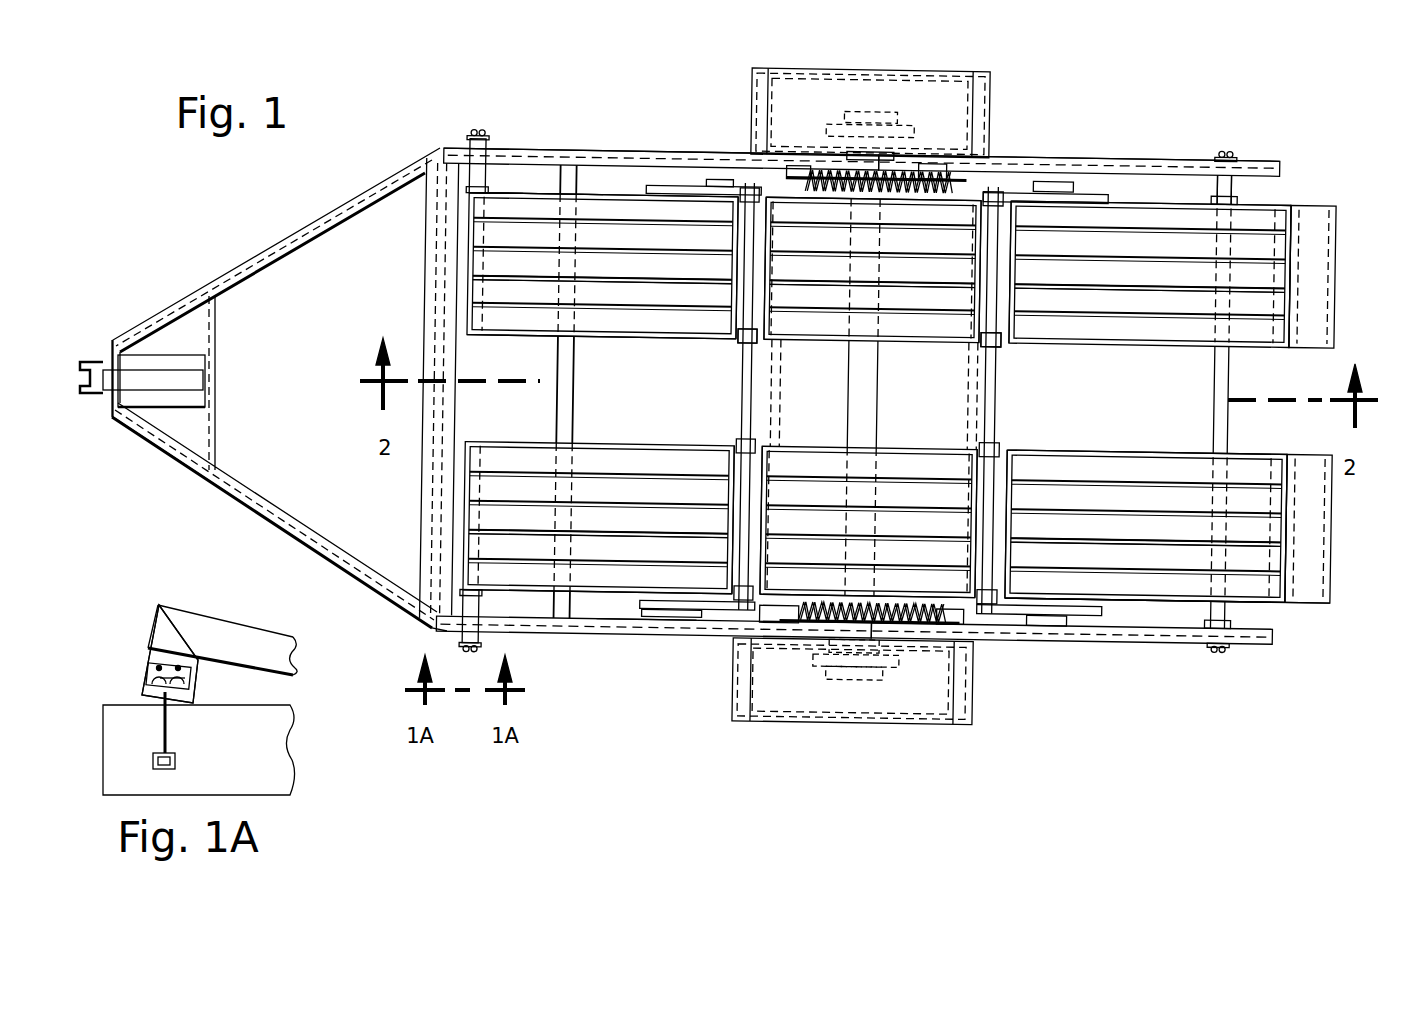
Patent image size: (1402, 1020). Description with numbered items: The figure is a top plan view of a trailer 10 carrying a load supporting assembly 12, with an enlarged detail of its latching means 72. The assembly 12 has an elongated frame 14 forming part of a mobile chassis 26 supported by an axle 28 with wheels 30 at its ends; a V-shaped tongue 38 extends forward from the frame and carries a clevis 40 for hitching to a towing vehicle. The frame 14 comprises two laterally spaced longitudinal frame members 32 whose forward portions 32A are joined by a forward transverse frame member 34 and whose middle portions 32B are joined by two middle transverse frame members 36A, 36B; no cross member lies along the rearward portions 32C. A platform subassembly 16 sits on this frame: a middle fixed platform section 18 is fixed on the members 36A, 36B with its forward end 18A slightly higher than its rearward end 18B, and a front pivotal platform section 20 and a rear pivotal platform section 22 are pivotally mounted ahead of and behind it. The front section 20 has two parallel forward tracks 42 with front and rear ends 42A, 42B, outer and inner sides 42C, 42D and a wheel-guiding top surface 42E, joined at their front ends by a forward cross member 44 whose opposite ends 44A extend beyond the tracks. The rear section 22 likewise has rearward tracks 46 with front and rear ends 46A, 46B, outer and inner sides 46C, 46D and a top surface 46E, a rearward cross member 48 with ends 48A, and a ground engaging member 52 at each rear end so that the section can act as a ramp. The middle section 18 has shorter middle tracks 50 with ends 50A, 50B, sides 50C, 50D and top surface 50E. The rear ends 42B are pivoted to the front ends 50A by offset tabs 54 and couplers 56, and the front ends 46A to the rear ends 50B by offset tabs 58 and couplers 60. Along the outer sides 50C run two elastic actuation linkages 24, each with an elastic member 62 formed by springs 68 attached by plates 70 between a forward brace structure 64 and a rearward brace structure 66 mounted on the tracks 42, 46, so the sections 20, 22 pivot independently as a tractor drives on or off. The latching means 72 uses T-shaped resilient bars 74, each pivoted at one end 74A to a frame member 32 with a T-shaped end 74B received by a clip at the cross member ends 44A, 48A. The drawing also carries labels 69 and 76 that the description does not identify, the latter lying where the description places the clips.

In FIG. 1, the trailer 10 is at (346, 105).
In FIG. 1, the load supporting assembly 12 is at (1210, 105).
In FIG. 1, the elongated frame 14 is at (650, 632).
In FIG. 1, the platform subassembly 16 is at (603, 185).
In FIG. 1, the middle fixed platform section 18 is at (930, 642).
In FIG. 1, the forward end 18A is at (735, 272).
In FIG. 1, the rearward end 18B is at (995, 293).
In FIG. 1, the front pivotal platform section 20 is at (505, 180).
In FIG. 1, the rear pivotal platform section 22 is at (1290, 615).
In FIG. 1, the actuation linkages 24 is at (838, 202).
In FIG. 1, the mobile chassis 26 is at (378, 154).
In FIG. 1, the axle 28 is at (868, 395).
In FIG. 1, the wheels 30 is at (985, 66).
In FIG. 1, the longitudinal frame members 32 is at (1085, 162).
In FIG. 1A, the longitudinal frame members 32 is at (290, 780).
In FIG. 1, the forward portions 32A is at (525, 160).
In FIG. 1, the middle portions 32B is at (1238, 152).
In FIG. 1, the rearward portions 32C is at (945, 150).
In FIG. 1, the forward transverse frame member 34 is at (572, 415).
In FIG. 1, the forward middle transverse frame member 36A is at (740, 375).
In FIG. 1, the rearward middle transverse frame member 36B is at (998, 375).
In FIG. 1, the V-shaped tongue 38 is at (239, 300).
In FIG. 1, the clevis 40 is at (98, 355).
In FIG. 1, the forward tracks 42 is at (616, 188).
In FIG. 1A, the forward tracks 42 is at (225, 625).
In FIG. 1, the front ends 42A is at (455, 268).
In FIG. 1, the rear ends 42B is at (755, 280).
In FIG. 1, the outer sides 42C is at (620, 190).
In FIG. 1, the inner sides 42D is at (500, 341).
In FIG. 1, the top surface 42E is at (580, 277).
In FIG. 1, the forward cross member 44 is at (466, 322).
In FIG. 1A, the forward cross member 44 is at (148, 660).
In FIG. 1, the opposite ends 44A is at (482, 200).
In FIG. 1A, the opposite ends 44A is at (143, 690).
In FIG. 1, the rearward tracks 46 is at (1160, 198).
In FIG. 1, the front ends 46A is at (1008, 265).
In FIG. 1, the rear ends 46B is at (1300, 300).
In FIG. 1, the outer sides 46C is at (1100, 190).
In FIG. 1, the inner sides 46D is at (1140, 450).
In FIG. 1, the top surface 46E is at (1140, 285).
In FIG. 1, the rearward cross member 48 is at (1222, 432).
In FIG. 1, the opposite ends 48A is at (1245, 198).
In FIG. 1, the middle tracks 50 is at (823, 352).
In FIG. 1, the front ends 50A is at (745, 290).
In FIG. 1, the rear ends 50B is at (990, 243).
In FIG. 1, the outer sides 50C is at (788, 183).
In FIG. 1, the inner sides 50D is at (940, 365).
In FIG. 1, the top surface 50E is at (800, 282).
In FIG. 1, the ground engaging member 52 is at (1310, 252).
In FIG. 1, the offset tabs 54 is at (740, 200).
In FIG. 1, the couplers 56 is at (745, 210).
In FIG. 1, the offset tabs 58 is at (1005, 188).
In FIG. 1, the couplers 60 is at (990, 225).
In FIG. 1, the elastic member 62 is at (858, 148).
In FIG. 1, the forward brace structure 64 is at (650, 180).
In FIG. 1, the rearward brace structure 66 is at (1050, 178).
In FIG. 1, the springs 68 is at (895, 194).
In FIG. 1, the link bracket 69 is at (685, 640).
In FIG. 1, the plates 70 is at (758, 182).
In FIG. 1, the latching means 72 is at (463, 140).
In FIG. 1A, the latching means 72 is at (207, 690).
In FIG. 1A, the bars 74 is at (172, 712).
In FIG. 1A, the one end 74A is at (176, 768).
In FIG. 1A, the T-shaped end 74B is at (160, 660).
In FIG. 1A, the washer 76 is at (178, 660).